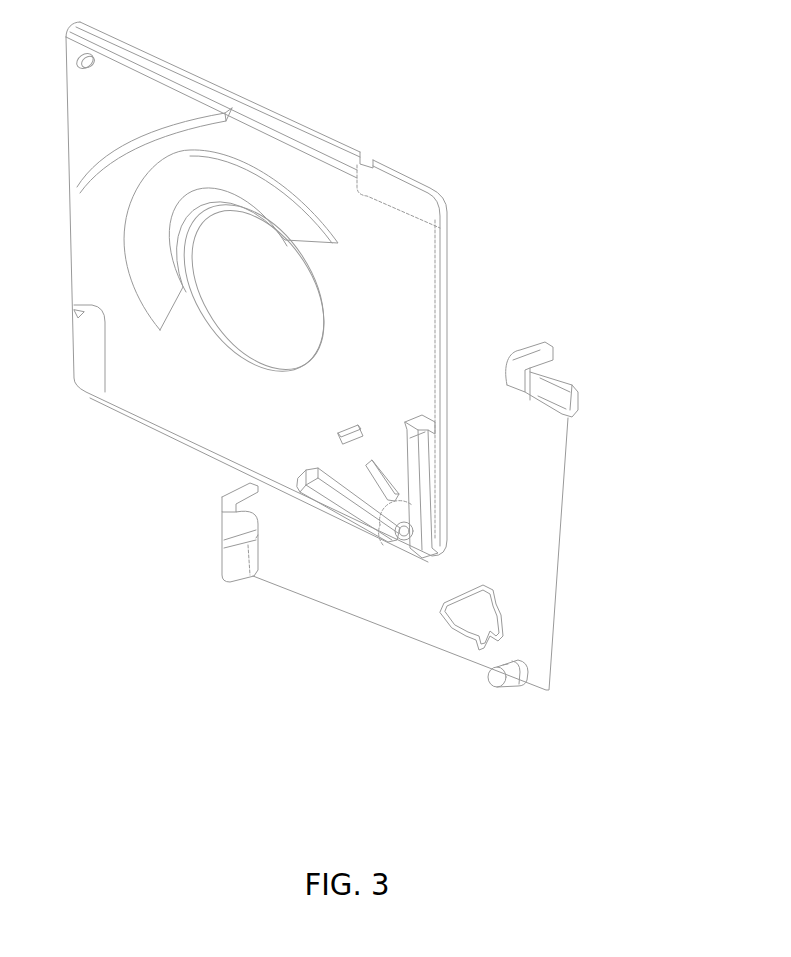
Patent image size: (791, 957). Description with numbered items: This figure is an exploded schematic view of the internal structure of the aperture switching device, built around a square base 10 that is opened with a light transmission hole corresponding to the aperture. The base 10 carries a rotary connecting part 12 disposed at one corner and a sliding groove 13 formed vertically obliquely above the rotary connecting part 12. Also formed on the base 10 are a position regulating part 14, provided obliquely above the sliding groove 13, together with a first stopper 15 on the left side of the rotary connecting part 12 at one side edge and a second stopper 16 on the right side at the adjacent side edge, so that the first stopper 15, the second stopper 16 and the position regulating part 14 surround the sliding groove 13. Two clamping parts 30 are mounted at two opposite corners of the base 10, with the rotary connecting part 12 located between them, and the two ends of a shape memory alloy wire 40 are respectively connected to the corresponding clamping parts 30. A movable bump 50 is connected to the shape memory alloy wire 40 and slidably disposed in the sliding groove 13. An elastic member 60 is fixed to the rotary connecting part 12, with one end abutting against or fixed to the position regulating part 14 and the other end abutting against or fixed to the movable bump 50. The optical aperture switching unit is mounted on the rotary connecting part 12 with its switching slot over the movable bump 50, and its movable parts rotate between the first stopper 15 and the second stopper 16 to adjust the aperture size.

The base 10 is at (309, 166).
The rotary connecting part 12 is at (404, 536).
The sliding groove 13 is at (374, 458).
The position regulating part 14 is at (355, 425).
The first stopper 15 is at (333, 503).
The second stopper 16 is at (418, 474).
The clamping parts 30 is at (245, 550).
The shape memory alloy wire 40 is at (402, 633).
The movable bump 50 is at (505, 680).
The elastic member 60 is at (467, 632).